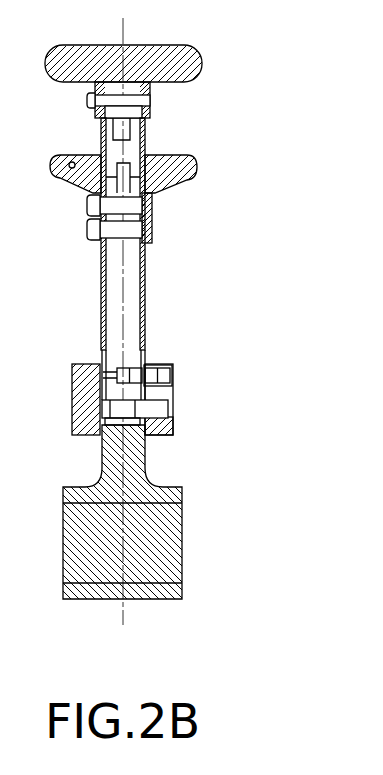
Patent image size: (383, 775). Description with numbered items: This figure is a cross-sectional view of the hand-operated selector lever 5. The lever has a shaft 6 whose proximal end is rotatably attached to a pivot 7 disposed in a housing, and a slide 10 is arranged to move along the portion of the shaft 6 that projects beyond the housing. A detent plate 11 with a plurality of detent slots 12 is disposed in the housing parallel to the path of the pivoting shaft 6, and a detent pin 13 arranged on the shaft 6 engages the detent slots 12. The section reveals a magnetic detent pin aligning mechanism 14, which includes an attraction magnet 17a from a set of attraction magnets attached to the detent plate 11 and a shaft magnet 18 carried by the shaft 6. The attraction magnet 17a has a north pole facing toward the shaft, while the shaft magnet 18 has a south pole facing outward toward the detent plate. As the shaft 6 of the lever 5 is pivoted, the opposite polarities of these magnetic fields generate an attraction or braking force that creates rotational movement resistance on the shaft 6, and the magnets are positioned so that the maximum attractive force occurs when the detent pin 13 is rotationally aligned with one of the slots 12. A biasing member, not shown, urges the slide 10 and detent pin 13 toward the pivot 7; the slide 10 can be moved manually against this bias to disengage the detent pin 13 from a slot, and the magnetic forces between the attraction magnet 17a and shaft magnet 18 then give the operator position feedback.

The selector lever 5 is at (186, 321).
The shaft 6 is at (145, 293).
The pivot 7 is at (182, 547).
The slide 10 is at (152, 212).
The detent plate 11 is at (172, 378).
The detent slots 12 is at (172, 403).
The detent pin 13 is at (160, 412).
The magnetic detent pin aligning mechanism 14 is at (185, 323).
The attraction magnet 17a is at (168, 363).
The shaft magnet 18 is at (125, 368).